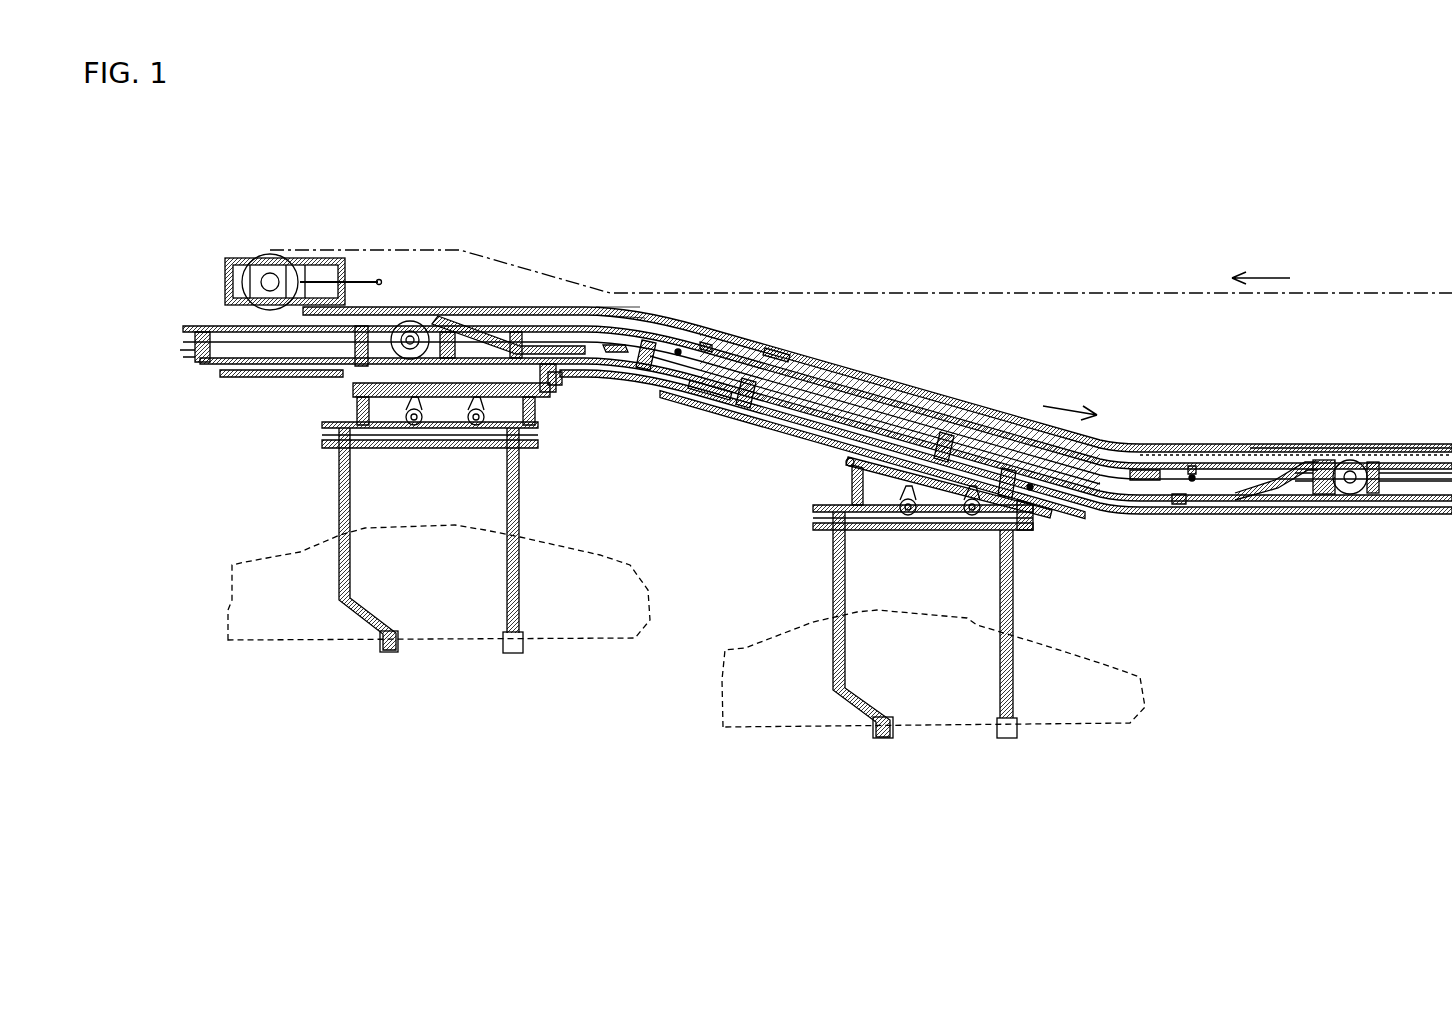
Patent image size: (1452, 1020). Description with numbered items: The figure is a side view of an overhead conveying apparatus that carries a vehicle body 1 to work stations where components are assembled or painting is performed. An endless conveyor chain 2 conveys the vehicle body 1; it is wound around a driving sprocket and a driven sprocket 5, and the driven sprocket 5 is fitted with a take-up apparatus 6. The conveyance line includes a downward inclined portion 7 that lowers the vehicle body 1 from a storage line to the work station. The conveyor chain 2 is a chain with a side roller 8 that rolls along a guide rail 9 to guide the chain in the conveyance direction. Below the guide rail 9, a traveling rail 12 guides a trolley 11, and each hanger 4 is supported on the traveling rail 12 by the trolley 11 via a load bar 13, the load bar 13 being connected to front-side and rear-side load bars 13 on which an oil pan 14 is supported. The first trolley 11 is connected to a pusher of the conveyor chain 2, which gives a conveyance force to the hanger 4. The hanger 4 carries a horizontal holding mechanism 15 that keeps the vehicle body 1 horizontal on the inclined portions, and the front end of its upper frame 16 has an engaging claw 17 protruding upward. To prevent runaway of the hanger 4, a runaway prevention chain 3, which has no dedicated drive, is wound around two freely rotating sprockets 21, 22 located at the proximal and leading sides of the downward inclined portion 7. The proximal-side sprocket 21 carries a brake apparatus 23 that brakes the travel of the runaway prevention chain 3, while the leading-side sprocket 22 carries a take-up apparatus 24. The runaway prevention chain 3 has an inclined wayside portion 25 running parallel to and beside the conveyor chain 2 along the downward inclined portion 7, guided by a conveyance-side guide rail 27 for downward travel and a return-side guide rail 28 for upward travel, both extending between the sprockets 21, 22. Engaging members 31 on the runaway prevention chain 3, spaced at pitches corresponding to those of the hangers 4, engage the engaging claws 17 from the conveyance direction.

The vehicle body 1 is at (292, 643).
The conveyor chain 2 is at (1078, 292).
The runaway prevention chain 3 is at (1340, 496).
The hanger 4 is at (520, 524).
The driven sprocket 5 is at (262, 258).
The take-up apparatus 6 is at (364, 280).
The downward inclined portion 7 is at (954, 386).
The side roller 8 is at (1118, 445).
The guide rail 9 is at (1246, 444).
The trolley 11 is at (203, 346).
The traveling rail 12 is at (848, 382).
The load bar 13 is at (241, 378).
The oil pan 14 is at (297, 380).
The horizontal holding mechanism 15 is at (492, 410).
The upper frame 16 is at (447, 394).
The engaging claw 17 is at (550, 395).
The sprocket 21 is at (410, 322).
The sprocket 22 is at (1356, 497).
The brake apparatus 23 is at (446, 322).
The take-up apparatus 24 is at (1306, 460).
The inclined wayside portion 25 is at (790, 432).
The conveyance-side guide rail 27 is at (706, 402).
The return-side guide rail 28 is at (614, 320).
The engaging member 31 is at (717, 346).